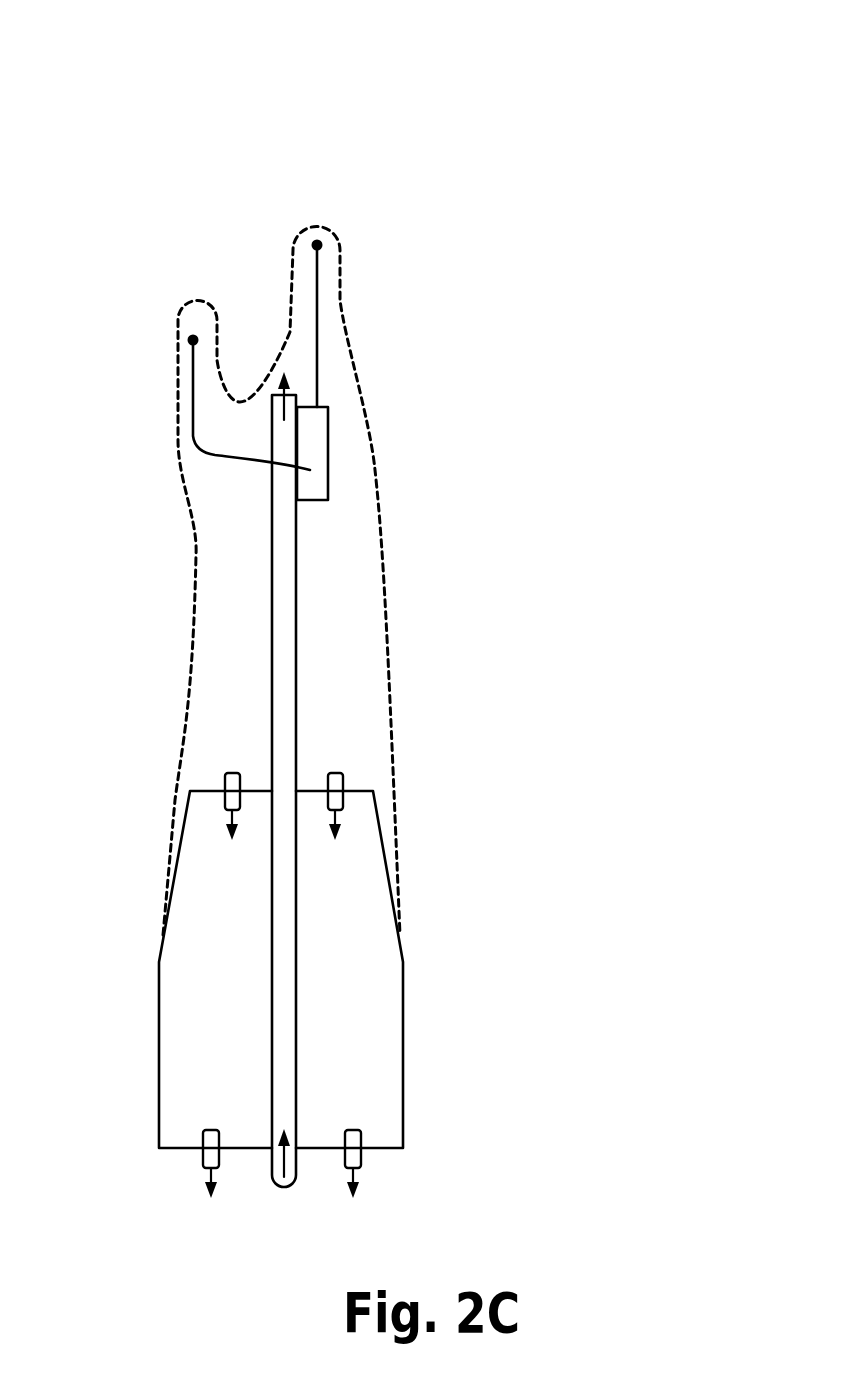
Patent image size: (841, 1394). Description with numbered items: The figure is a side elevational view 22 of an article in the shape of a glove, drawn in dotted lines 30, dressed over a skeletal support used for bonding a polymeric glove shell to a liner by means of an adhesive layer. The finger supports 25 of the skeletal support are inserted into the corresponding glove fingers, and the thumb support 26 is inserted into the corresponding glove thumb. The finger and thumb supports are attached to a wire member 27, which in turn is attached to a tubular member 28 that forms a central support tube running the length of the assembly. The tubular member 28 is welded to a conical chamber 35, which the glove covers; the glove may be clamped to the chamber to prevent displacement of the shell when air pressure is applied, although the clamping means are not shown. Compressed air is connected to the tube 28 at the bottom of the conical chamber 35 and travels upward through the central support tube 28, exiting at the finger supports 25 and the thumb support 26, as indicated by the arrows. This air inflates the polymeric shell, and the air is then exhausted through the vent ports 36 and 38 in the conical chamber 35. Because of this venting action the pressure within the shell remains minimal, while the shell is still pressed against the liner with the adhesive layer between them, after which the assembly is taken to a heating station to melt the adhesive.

The side elevational view 22 is at (395, 118).
The finger supports 25 is at (313, 255).
The thumb support 26 is at (190, 370).
The wire member 27 is at (328, 474).
The tubular member 28 is at (272, 645).
The dotted lines 30 is at (185, 708).
The conical chamber 35 is at (158, 965).
The air vent openings 36 is at (232, 773).
The air vent openings 38 is at (210, 1130).